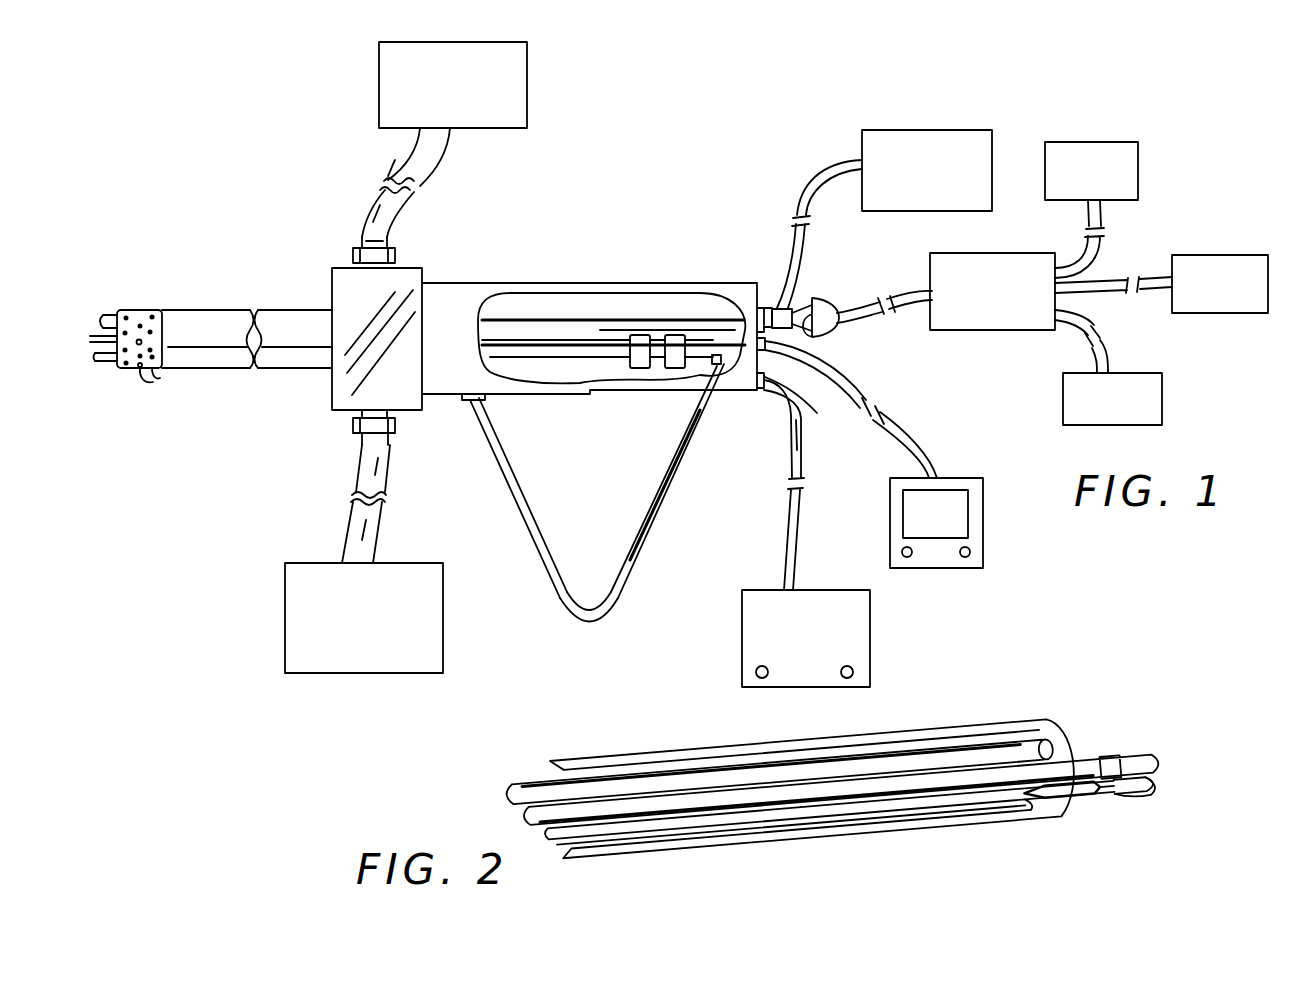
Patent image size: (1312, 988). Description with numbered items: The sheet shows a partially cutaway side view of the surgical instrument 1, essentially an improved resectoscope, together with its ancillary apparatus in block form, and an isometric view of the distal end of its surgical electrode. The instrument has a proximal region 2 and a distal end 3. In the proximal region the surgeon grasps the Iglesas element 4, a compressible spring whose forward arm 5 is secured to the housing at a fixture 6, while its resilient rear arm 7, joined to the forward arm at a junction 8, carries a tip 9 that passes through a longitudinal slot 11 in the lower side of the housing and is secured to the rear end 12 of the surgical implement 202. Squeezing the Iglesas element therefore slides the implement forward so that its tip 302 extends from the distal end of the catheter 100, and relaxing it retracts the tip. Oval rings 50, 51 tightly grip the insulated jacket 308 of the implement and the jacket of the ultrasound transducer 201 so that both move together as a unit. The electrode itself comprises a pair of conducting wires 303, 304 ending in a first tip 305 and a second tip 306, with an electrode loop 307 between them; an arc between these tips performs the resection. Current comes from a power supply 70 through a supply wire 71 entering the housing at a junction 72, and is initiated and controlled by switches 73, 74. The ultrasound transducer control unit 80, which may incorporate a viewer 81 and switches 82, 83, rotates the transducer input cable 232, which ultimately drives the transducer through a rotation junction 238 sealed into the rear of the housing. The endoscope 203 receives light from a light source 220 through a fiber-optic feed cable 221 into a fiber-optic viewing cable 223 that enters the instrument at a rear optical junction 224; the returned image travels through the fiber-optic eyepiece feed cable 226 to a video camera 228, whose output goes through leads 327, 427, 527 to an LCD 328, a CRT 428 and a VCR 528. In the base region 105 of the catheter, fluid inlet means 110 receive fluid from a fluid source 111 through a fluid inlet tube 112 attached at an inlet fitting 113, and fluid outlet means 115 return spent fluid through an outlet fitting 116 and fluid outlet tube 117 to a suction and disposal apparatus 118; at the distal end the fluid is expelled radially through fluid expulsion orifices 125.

In FIG. 1, the surgical instrument 1 is at (631, 172).
In FIG. 1, the proximal region 2 is at (590, 276).
In FIG. 1, the distal end 3 is at (119, 280).
In FIG. 1, the Iglesas element 4 is at (582, 590).
In FIG. 1, the forward arm 5 is at (520, 533).
In FIG. 1, the fixture 6 is at (470, 398).
In FIG. 1, the rear arm 7 is at (651, 552).
In FIG. 1, the junction 8 is at (592, 630).
In FIG. 1, the tip of rear arm 9 is at (721, 415).
In FIG. 1, the longitudinal slot 11 is at (614, 395).
In FIG. 1, the rear end of surgical implement 12 is at (706, 370).
In FIG. 1, the oval ring 50 is at (641, 334).
In FIG. 1, the oval ring 51 is at (676, 334).
In FIG. 1, the power supply 70 is at (742, 630).
In FIG. 1, the supply wire 71 is at (806, 460).
In FIG. 1, the junction 72 is at (758, 394).
In FIG. 1, the switch 73 is at (755, 678).
In FIG. 1, the switch 74 is at (856, 672).
In FIG. 1, the ultrasound transducer control unit 80 is at (968, 478).
In FIG. 1, the viewer 81 is at (946, 528).
In FIG. 1, the switch 82 is at (908, 558).
In FIG. 1, the switch 83 is at (970, 555).
In FIG. 1, the catheter 100 is at (218, 320).
In FIG. 2, the catheter 100 is at (876, 734).
In FIG. 1, the base region 105 is at (285, 232).
In FIG. 1, the fluid inlet means 110 is at (402, 246).
In FIG. 1, the fluid source 111 is at (527, 91).
In FIG. 1, the fluid inlet tube 112 is at (373, 187).
In FIG. 1, the inlet fitting 113 is at (353, 255).
In FIG. 1, the fluid outlet means 115 is at (336, 410).
In FIG. 1, the outlet fitting 116 is at (395, 425).
In FIG. 1, the fluid outlet tube 117 is at (358, 476).
In FIG. 1, the suction and disposal apparatus 118 is at (443, 666).
In FIG. 1, the fluid expulsion orifices 125 is at (160, 378).
In FIG. 1, the ultrasound transducer 201 is at (564, 345).
In FIG. 2, the ultrasound transducer 201 is at (1152, 752).
In FIG. 1, the surgical implement 202 is at (545, 372).
In FIG. 1, the endoscope 203 is at (517, 322).
In FIG. 2, the endoscope 203 is at (1063, 725).
In FIG. 1, the light source 220 is at (985, 130).
In FIG. 1, the fiber-optic feed cable 221 is at (794, 205).
In FIG. 1, the fiber-optic viewing cable 223 is at (769, 306).
In FIG. 1, the rear optical junction 224 is at (770, 312).
In FIG. 1, the fiber-optic eyepiece feed cable 226 is at (803, 327).
In FIG. 1, the video camera 228 is at (985, 331).
In FIG. 1, the transducer input cable 232 is at (876, 393).
In FIG. 1, the rotation junction 238 is at (813, 407).
In FIG. 1, the tip of surgical implement 302 is at (106, 388).
In FIG. 2, the conducting wire 303 is at (1093, 793).
In FIG. 2, the conducting wire 304 is at (1033, 807).
In FIG. 2, the first tip 305 is at (1160, 776).
In FIG. 2, the second tip 306 is at (1116, 808).
In FIG. 2, the electrode loop 307 is at (1152, 796).
In FIG. 2, the insulated jacket 308 is at (917, 813).
In FIG. 1, the lead 327 is at (1080, 250).
In FIG. 1, the LCD 328 is at (1133, 142).
In FIG. 1, the lead 427 is at (1112, 281).
In FIG. 1, the CRT 428 is at (1238, 255).
In FIG. 1, the lead 527 is at (1100, 317).
In FIG. 1, the VCR 528 is at (1162, 405).